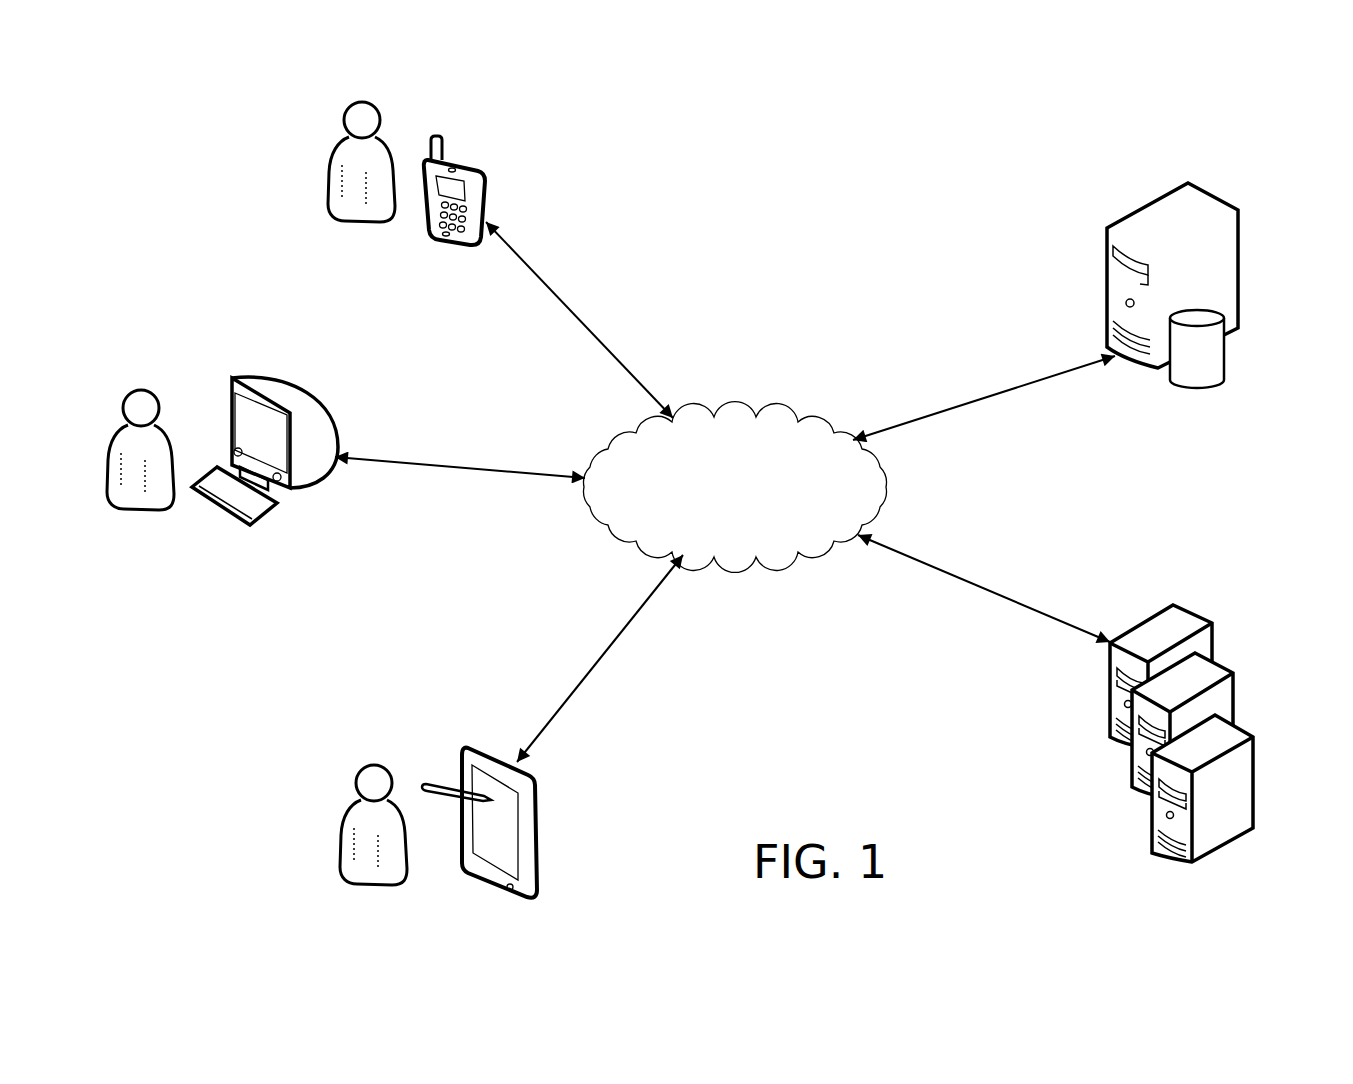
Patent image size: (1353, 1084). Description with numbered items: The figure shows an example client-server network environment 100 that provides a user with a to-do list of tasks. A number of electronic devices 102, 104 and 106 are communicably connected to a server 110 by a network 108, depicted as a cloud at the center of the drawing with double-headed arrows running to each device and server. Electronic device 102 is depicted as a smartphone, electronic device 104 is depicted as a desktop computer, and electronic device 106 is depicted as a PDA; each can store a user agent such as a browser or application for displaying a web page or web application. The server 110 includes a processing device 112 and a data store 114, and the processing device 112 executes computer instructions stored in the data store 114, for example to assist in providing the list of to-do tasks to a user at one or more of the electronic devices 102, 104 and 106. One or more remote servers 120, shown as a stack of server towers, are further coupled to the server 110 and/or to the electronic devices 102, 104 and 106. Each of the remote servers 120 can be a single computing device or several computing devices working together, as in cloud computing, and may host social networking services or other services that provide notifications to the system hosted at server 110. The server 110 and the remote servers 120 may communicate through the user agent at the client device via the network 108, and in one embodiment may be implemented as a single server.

The network environment 100 is at (862, 148).
The electronic device 102 is at (467, 160).
The electronic device 104 is at (303, 388).
The electronic device 106 is at (475, 748).
The network 108 is at (735, 413).
The server 110 is at (1107, 397).
The processing device 112 is at (1212, 193).
The data store 114 is at (1223, 368).
The remote servers 120 is at (1104, 832).